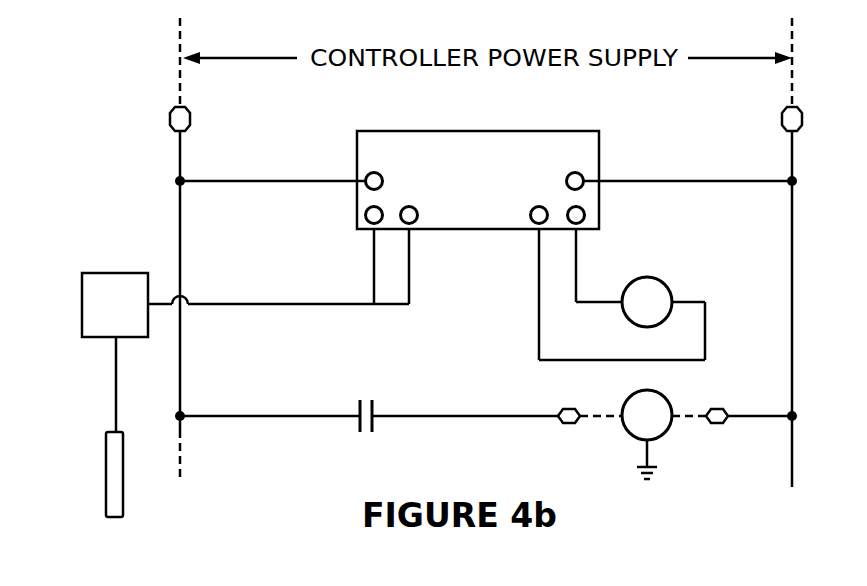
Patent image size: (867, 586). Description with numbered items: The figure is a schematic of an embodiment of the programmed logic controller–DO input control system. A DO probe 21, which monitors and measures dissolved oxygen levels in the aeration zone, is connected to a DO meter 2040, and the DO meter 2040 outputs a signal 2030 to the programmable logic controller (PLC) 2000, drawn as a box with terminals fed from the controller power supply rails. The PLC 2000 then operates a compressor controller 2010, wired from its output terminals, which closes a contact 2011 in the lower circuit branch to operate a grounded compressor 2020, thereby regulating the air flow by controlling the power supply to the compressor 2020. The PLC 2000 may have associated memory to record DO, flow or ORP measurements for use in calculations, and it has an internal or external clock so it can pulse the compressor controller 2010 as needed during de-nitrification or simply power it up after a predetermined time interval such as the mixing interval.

The programmable logic controller 2000 is at (599, 131).
The compressor controller 2010 is at (660, 290).
The contact 2011 is at (374, 410).
The compressor 2020 is at (660, 437).
The signal 2030 is at (251, 306).
The DO meter 2040 is at (127, 272).
The DO probe 21 is at (123, 490).